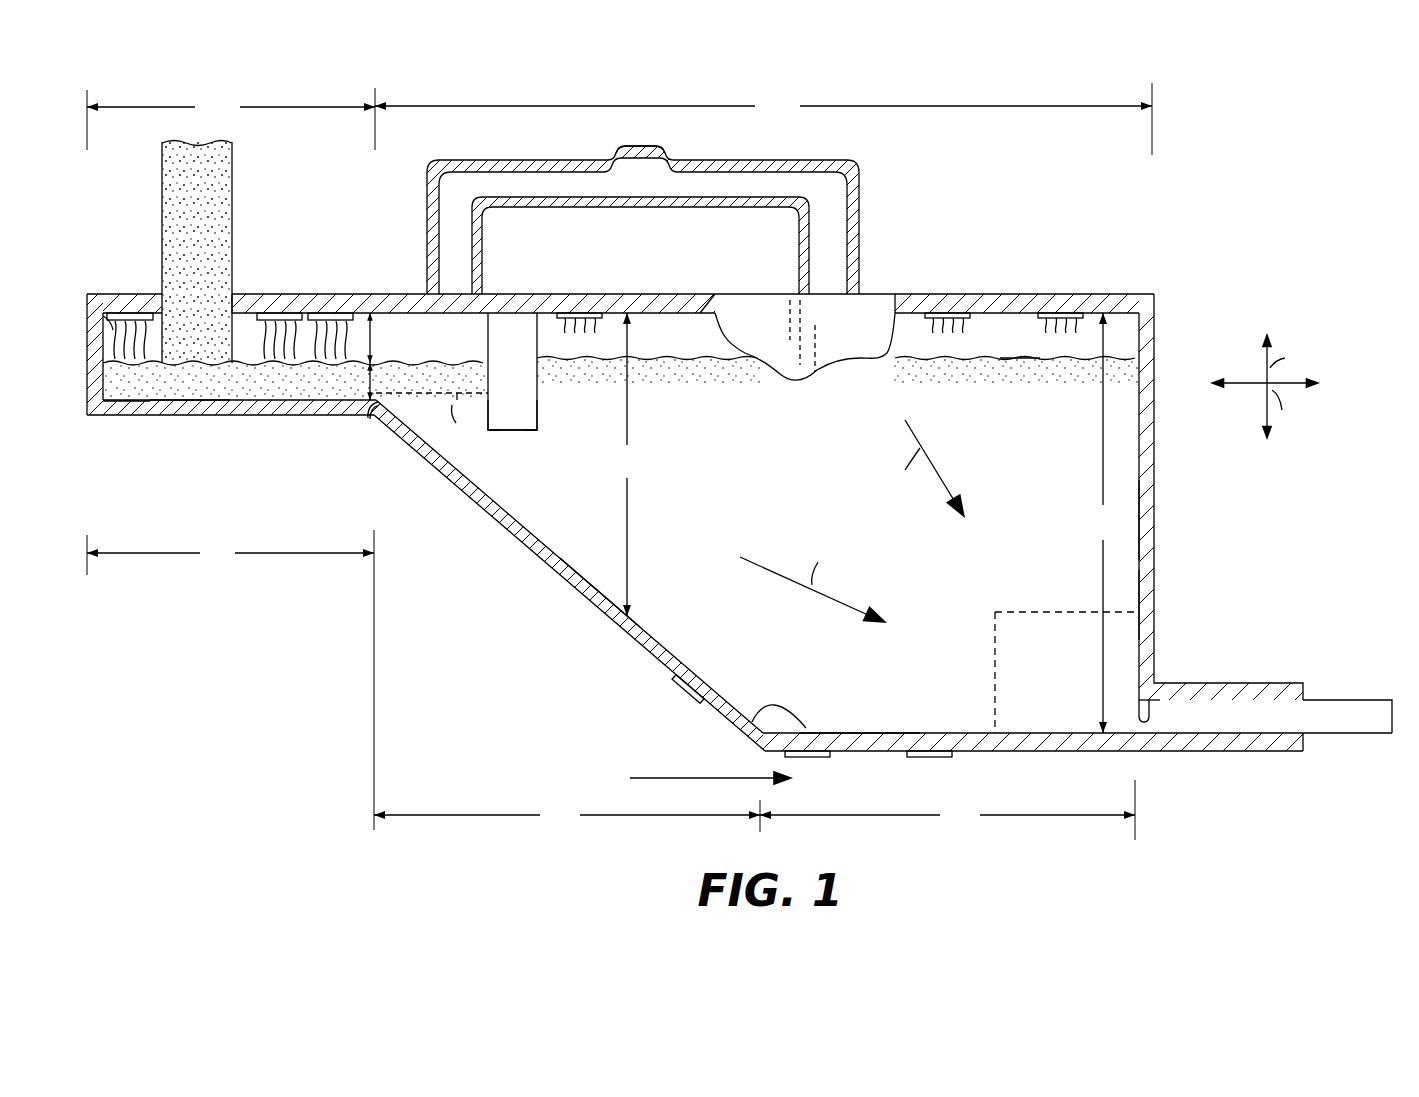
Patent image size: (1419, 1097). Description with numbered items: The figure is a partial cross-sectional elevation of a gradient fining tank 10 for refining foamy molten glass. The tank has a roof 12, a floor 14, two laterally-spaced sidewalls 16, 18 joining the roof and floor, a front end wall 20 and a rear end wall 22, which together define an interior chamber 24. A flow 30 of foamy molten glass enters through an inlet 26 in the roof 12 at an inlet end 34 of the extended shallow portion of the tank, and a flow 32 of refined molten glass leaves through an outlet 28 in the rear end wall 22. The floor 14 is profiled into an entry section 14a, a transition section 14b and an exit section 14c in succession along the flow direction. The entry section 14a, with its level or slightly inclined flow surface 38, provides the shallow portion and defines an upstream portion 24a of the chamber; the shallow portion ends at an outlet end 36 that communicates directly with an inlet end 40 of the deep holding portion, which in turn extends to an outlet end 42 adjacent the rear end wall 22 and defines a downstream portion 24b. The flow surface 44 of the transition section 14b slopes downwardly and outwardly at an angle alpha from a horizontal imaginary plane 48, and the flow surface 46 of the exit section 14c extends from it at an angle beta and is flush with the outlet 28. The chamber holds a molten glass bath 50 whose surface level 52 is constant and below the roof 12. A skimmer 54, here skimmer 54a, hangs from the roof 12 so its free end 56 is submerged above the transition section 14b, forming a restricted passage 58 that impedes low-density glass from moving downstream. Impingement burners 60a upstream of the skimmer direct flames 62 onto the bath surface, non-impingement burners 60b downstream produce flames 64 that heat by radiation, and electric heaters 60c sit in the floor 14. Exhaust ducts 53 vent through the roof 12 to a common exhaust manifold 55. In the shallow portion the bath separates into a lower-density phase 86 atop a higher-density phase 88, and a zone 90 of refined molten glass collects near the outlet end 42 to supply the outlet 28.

The gradient fining tank 10 is at (719, 461).
The roof 12 is at (620, 270).
The floor 14 is at (733, 598).
The entry section 14a is at (226, 433).
The transition section 14b is at (560, 575).
The exit section 14c is at (1077, 762).
The sidewall 16 is at (716, 315).
The sidewall 18 is at (1016, 311).
The front end wall 20 is at (79, 341).
The rear end wall 22 is at (1265, 513).
The interior chamber 24 is at (1175, 560).
The upstream portion 24a is at (126, 406).
The downstream portion 24b is at (685, 326).
The inlet 26 is at (236, 300).
The outlet 28 is at (1145, 720).
The flow of foamy molten glass 30 is at (170, 186).
The flow of refined molten glass 32 is at (1355, 716).
The inlet end 34 is at (100, 318).
The outlet end 36 is at (342, 434).
The flow surface 38 is at (185, 405).
The inlet end 40 is at (372, 412).
The outlet end 42 is at (1141, 588).
The flow surface 44 is at (615, 605).
The flow surface 46 is at (870, 728).
The horizontal imaginary plane 48 is at (460, 399).
The molten glass bath 50 is at (846, 525).
The surface level 52 is at (1022, 330).
The exhaust duct 53 is at (637, 211).
The skimmer 54 is at (546, 367).
The skimmer 54a is at (525, 382).
The common exhaust manifold 55 is at (612, 155).
The free end 56 is at (526, 432).
The restricted passage 58 is at (489, 435).
The impingement burner 60a is at (127, 318).
The non-impingement burner 60b is at (843, 324).
The electric heater 60c is at (703, 706).
The flame 62 is at (269, 390).
The flame 64 is at (590, 334).
The lower-density phase 86 is at (445, 360).
The higher-density phase 88 is at (428, 392).
The zone of refined molten glass 90 is at (993, 660).